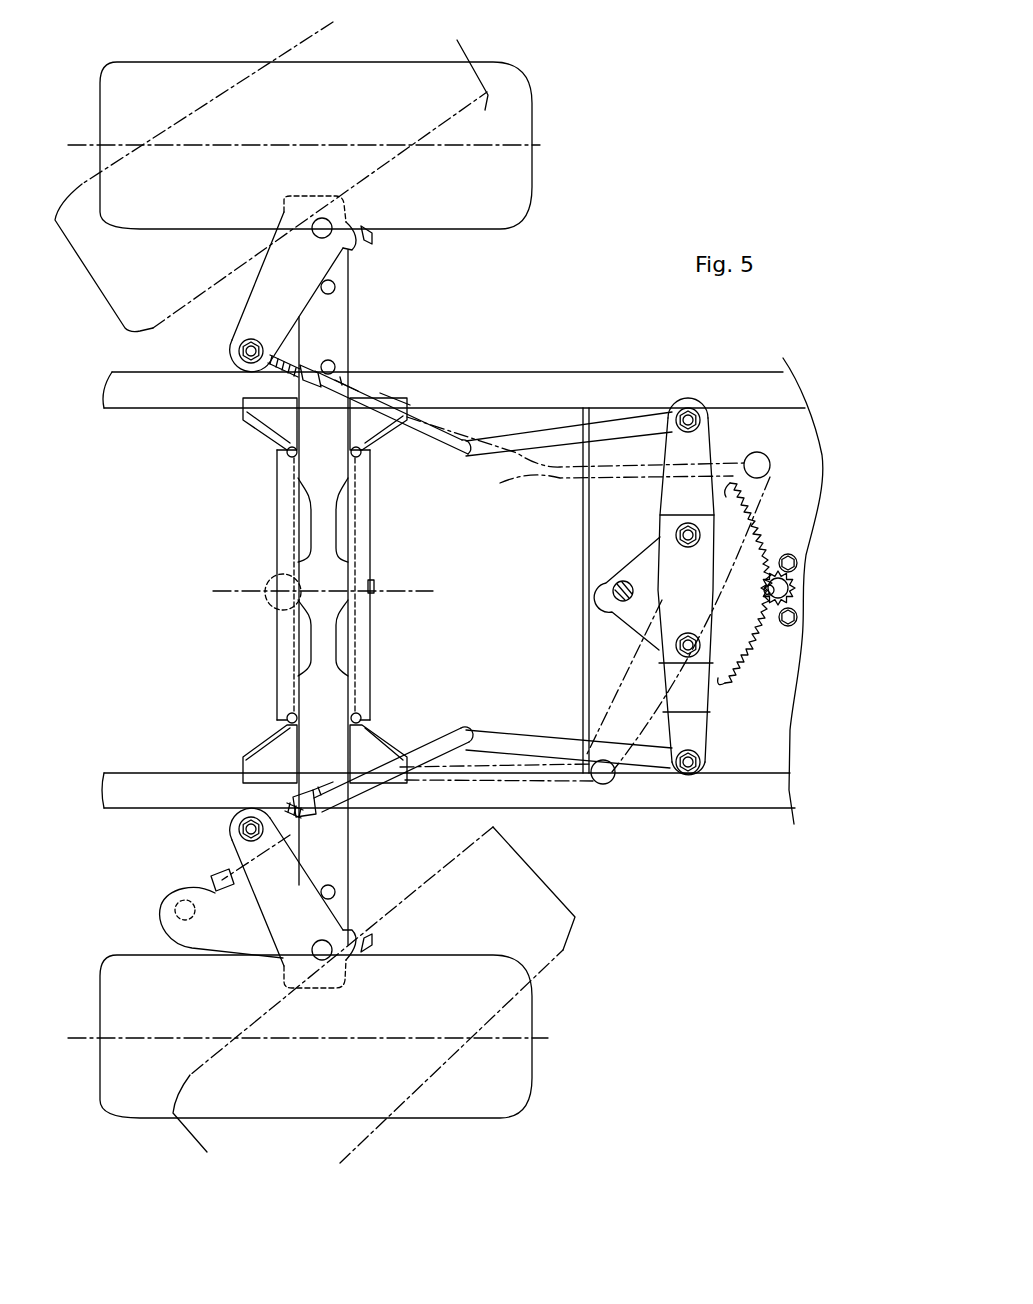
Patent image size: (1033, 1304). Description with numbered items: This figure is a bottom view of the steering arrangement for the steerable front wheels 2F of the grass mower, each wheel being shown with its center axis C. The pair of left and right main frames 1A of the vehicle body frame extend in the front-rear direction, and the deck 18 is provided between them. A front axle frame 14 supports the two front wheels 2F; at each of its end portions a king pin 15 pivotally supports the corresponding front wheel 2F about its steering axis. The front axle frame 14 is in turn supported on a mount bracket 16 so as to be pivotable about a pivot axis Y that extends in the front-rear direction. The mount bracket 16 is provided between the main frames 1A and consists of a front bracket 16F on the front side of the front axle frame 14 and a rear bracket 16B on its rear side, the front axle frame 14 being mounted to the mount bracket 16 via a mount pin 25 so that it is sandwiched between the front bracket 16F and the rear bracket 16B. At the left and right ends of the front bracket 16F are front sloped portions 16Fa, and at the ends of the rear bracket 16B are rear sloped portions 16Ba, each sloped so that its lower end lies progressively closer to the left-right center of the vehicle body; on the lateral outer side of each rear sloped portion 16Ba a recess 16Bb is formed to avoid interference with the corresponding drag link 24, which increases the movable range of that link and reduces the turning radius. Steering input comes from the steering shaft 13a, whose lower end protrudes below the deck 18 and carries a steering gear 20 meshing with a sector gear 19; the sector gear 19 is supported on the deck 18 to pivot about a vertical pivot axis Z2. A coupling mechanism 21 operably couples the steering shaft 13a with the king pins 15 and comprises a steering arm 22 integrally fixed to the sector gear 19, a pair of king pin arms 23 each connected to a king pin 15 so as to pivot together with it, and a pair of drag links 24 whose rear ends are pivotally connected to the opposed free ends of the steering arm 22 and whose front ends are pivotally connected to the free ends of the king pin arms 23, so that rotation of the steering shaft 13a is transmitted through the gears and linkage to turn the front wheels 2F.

The steerable front wheel 2F is at (520, 181).
The wheel center axis C is at (320, 593).
The main frame 1A is at (517, 378).
The deck 18 is at (588, 527).
The steering arm 22 is at (665, 500).
The pivot axis Z2 is at (618, 606).
The steering shaft 13a is at (775, 600).
The sector gear 19 is at (753, 537).
The steering gear 20 is at (772, 577).
The drag link 24 is at (513, 450).
The coupling mechanism 21 is at (572, 420).
The front axle frame 14 is at (330, 530).
The mount bracket 16 is at (207, 632).
The front bracket 16F is at (280, 645).
The rear bracket 16B is at (363, 670).
The front sloped portion 16Fa is at (268, 428).
The rear sloped portion 16Ba is at (378, 437).
The recess 16Bb is at (398, 392).
The king pin arm 23 is at (237, 335).
The king pin 15 is at (345, 255).
The mount pin 25 is at (280, 574).
The pivot axis Y is at (311, 592).